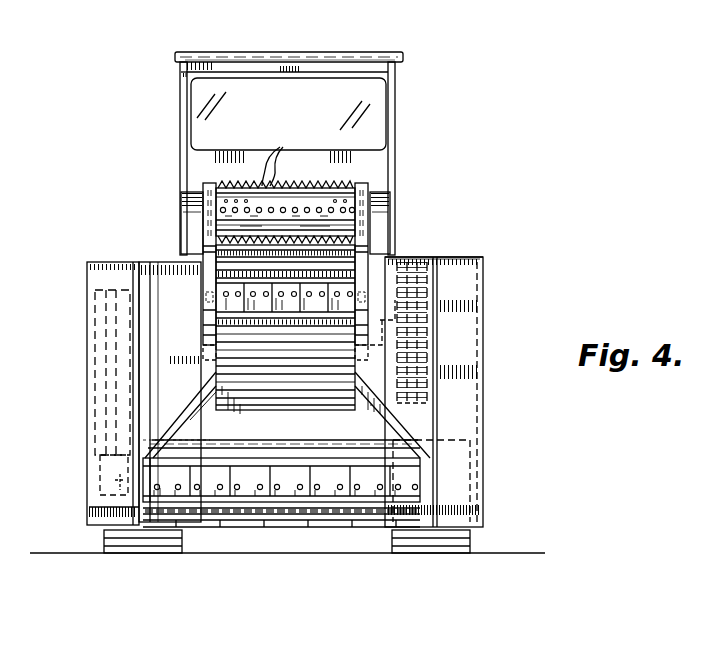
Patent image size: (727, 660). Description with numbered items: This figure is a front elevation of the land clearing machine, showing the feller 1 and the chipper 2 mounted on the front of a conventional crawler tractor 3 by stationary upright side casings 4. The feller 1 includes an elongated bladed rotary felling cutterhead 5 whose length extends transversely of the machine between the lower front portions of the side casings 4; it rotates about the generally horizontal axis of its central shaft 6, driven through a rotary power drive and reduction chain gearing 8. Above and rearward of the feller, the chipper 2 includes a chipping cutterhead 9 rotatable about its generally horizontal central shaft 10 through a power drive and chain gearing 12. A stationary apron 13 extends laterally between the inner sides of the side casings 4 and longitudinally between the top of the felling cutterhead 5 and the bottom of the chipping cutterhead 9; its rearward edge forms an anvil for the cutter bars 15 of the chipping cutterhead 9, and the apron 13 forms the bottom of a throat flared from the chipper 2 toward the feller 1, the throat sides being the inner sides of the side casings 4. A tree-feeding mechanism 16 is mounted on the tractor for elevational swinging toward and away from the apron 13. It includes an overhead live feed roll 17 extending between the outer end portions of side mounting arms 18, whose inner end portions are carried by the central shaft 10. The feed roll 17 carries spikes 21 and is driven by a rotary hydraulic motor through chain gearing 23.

The feller 1 is at (214, 542).
The chipper 2 is at (220, 378).
The crawler tractor 3 is at (184, 146).
The side casings 4 is at (96, 326).
The felling cutterhead 5 is at (324, 528).
The central shaft 6 is at (96, 512).
The reduction chain gearing 8 is at (112, 487).
The chipping cutterhead 9 is at (245, 368).
The central shaft 10 is at (385, 334).
The chain gearing 12 is at (428, 257).
The apron 13 is at (364, 461).
The cutter bars 15 is at (216, 326).
The tree-feeding mechanism 16 is at (386, 222).
The feed roll 17 is at (345, 188).
The side mounting arms 18 is at (206, 186).
The spikes 21 is at (279, 155).
The chain gearing 23 is at (182, 210).